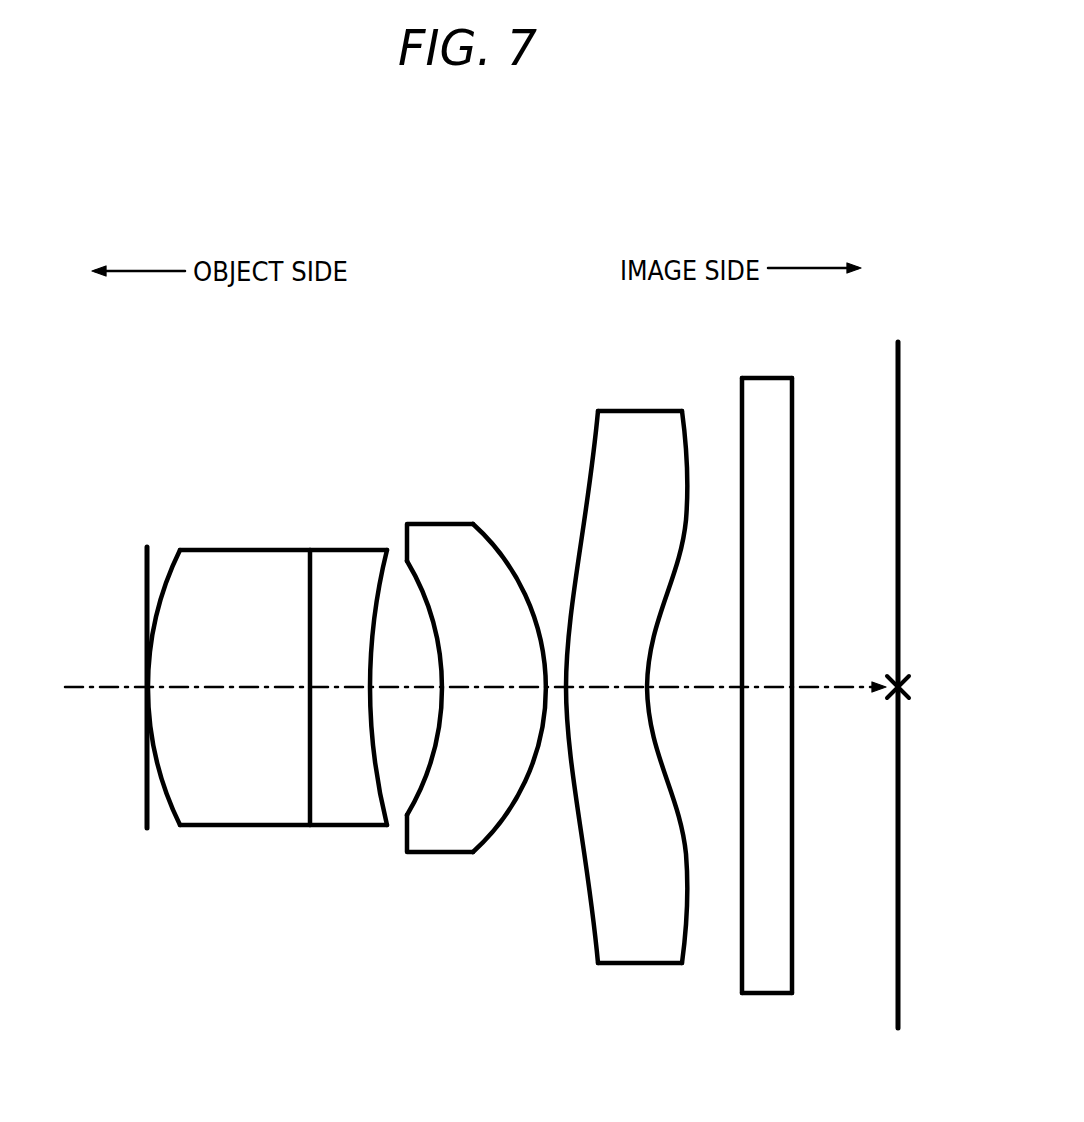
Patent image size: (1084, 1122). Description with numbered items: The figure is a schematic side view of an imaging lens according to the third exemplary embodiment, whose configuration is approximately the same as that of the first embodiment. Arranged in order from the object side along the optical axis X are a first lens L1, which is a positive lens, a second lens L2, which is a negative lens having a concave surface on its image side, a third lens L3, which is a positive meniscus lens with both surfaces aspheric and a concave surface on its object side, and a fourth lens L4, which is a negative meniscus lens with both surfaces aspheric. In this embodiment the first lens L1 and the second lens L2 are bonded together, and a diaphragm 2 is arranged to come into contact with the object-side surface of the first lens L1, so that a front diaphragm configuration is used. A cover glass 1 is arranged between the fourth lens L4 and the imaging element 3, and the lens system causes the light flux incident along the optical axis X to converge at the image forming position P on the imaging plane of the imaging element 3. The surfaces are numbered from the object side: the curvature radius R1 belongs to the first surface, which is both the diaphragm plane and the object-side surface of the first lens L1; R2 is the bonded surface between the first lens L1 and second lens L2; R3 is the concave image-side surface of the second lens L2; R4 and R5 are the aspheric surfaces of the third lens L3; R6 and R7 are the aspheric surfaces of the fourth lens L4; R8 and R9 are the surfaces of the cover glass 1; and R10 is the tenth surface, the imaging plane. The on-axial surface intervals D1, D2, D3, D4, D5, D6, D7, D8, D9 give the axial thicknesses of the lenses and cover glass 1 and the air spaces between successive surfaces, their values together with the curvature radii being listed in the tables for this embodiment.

The cover glass 1 is at (770, 722).
The diaphragm 2 is at (146, 590).
The imaging element 3 is at (863, 713).
The first lens L1 is at (225, 680).
The second lens L2 is at (348, 680).
The third lens L3 is at (466, 671).
The fourth lens L4 is at (627, 653).
The curvature radius of first surface R1 is at (163, 797).
The curvature radius of second surface R2 is at (307, 747).
The curvature radius of third surface R3 is at (373, 747).
The curvature radius of fourth surface R4 is at (439, 694).
The curvature radius of fifth surface R5 is at (543, 719).
The curvature radius of sixth surface R6 is at (568, 711).
The curvature radius of seventh surface R7 is at (650, 670).
The curvature radius of eighth surface R8 is at (742, 915).
The curvature radius of ninth surface R9 is at (792, 550).
The curvature radius of tenth surface R10 is at (897, 817).
The on-axial surface interval D1 is at (215, 687).
The on-axial surface interval D2 is at (340, 687).
The on-axial surface interval D3 is at (402, 687).
The on-axial surface interval D4 is at (466, 690).
The on-axial surface interval D5 is at (555, 683).
The on-axial surface interval D6 is at (612, 690).
The on-axial surface interval D7 is at (703, 692).
The on-axial surface interval D8 is at (775, 680).
The on-axial surface interval D9 is at (847, 690).
The optical axis X is at (120, 690).
The image forming position P is at (907, 685).